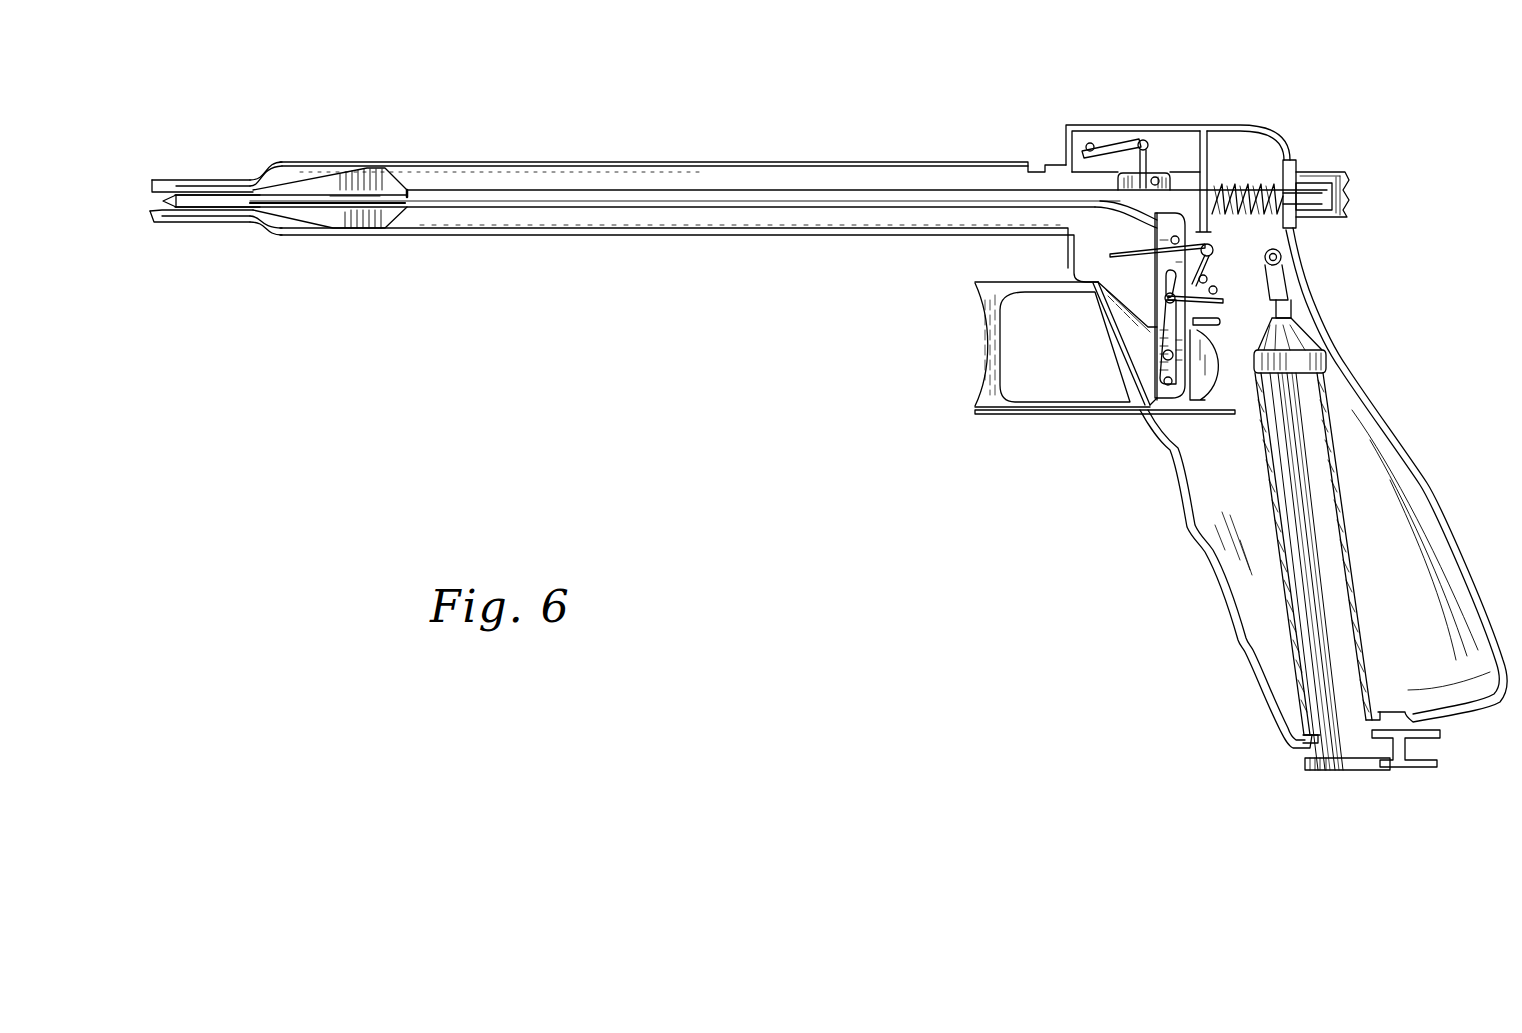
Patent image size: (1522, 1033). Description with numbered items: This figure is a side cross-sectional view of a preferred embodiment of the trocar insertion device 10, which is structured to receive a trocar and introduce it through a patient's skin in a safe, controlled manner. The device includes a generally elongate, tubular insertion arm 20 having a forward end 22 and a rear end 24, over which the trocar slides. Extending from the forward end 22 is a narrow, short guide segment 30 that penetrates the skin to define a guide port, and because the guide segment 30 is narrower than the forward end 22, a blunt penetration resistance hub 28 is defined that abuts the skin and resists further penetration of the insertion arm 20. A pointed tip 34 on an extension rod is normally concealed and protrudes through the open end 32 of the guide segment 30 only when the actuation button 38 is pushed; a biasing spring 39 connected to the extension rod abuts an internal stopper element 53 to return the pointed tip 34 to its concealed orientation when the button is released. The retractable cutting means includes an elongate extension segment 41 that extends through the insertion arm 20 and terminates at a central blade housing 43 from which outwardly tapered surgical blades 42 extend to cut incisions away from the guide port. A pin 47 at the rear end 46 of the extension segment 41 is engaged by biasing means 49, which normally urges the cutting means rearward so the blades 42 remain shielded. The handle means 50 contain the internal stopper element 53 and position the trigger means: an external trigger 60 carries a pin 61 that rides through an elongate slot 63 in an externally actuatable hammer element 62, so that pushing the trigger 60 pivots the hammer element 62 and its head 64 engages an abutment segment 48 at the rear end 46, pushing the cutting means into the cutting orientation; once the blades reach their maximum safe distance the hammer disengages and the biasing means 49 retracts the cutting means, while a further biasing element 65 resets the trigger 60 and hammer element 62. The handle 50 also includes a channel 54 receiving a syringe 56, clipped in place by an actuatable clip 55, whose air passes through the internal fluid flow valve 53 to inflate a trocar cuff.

The trocar insertion device 10 is at (770, 396).
The insertion arm 20 is at (716, 243).
The forward end 22 is at (296, 240).
The rear end 24 is at (970, 162).
The penetration resistance hub 28 is at (262, 242).
The guide segment 30 is at (207, 176).
The open end 32 is at (160, 200).
The pointed tip 34 is at (164, 215).
The actuation button 38 is at (1320, 172).
The biasing spring 39 is at (1247, 182).
The elongate extension segment 41 is at (746, 200).
The surgical blade 42 is at (374, 188).
The central blade housing 43 is at (327, 194).
The rear end 46 is at (1179, 190).
The pin 47 is at (1149, 176).
The abutment segment 48 is at (1152, 218).
The biasing means 49 is at (1104, 143).
The handle means 50 is at (1382, 378).
The internal stopper element 53 is at (1210, 160).
The channel 54 is at (1348, 518).
The actuatable clip 55 is at (1427, 770).
The syringe 56 is at (1346, 770).
The external trigger 60 is at (984, 396).
The pin 61 is at (1165, 358).
The externally actuatable hammer element 62 is at (1154, 404).
The elongate slot 63 is at (1176, 394).
The head 64 is at (1166, 224).
The further biasing element 65 is at (1216, 302).